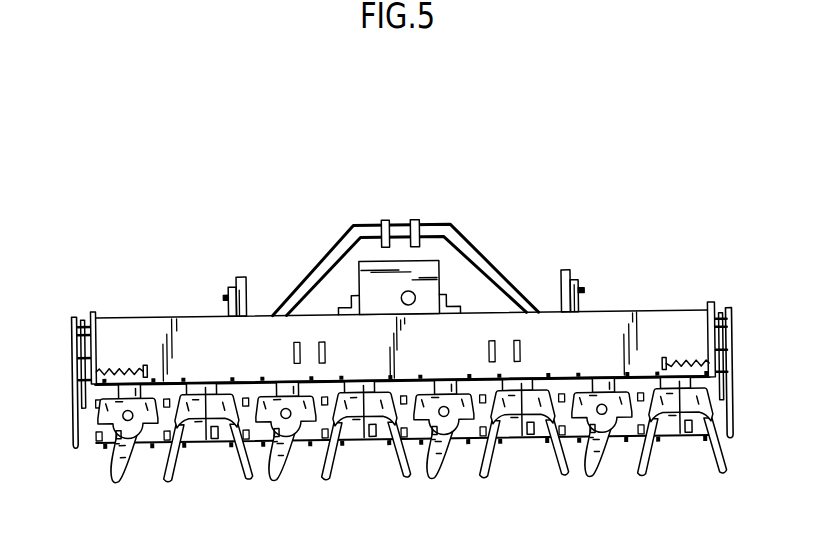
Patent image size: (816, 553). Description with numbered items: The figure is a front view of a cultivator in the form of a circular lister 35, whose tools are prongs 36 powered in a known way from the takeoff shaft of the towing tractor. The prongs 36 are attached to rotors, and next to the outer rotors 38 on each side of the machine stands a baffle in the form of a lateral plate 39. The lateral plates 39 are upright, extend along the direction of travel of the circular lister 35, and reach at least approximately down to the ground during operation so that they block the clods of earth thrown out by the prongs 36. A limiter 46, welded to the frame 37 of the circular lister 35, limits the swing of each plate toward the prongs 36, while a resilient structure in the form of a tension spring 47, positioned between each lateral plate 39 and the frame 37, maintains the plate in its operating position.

The circular lister 35 is at (479, 329).
The prongs 36 is at (118, 477).
The frame 37 is at (150, 330).
The outer rotors 38 is at (205, 413).
The lateral plates 39 is at (77, 448).
The limiter 46 is at (84, 356).
The tension spring 47 is at (107, 362).